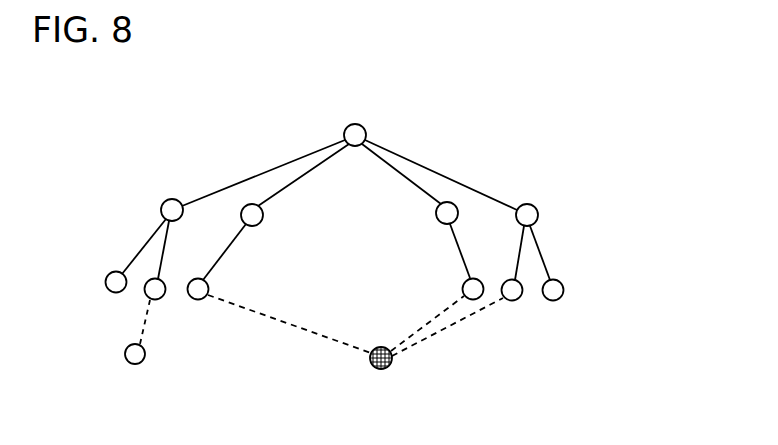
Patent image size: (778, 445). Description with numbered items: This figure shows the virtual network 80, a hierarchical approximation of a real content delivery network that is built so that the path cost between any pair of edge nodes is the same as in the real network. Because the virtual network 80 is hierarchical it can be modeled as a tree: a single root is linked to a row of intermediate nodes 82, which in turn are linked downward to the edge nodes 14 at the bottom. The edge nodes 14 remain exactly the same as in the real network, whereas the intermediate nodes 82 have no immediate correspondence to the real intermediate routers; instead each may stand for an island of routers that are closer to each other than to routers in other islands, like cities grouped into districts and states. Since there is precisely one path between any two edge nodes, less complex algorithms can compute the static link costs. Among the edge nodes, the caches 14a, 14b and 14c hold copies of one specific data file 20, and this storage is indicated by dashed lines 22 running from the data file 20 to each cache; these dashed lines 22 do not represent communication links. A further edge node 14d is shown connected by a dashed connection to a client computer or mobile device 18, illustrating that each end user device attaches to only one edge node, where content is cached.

The virtual network 80 is at (374, 77).
The intermediate node 82 is at (455, 201).
The edge node 14 is at (105, 281).
The cache 14a is at (200, 299).
The cache 14b is at (469, 300).
The cache 14c is at (521, 296).
The edge node 14d is at (150, 299).
The client computer or mobile device 18 is at (131, 364).
The data file 20 is at (368, 358).
The dashed line 22 is at (277, 320).